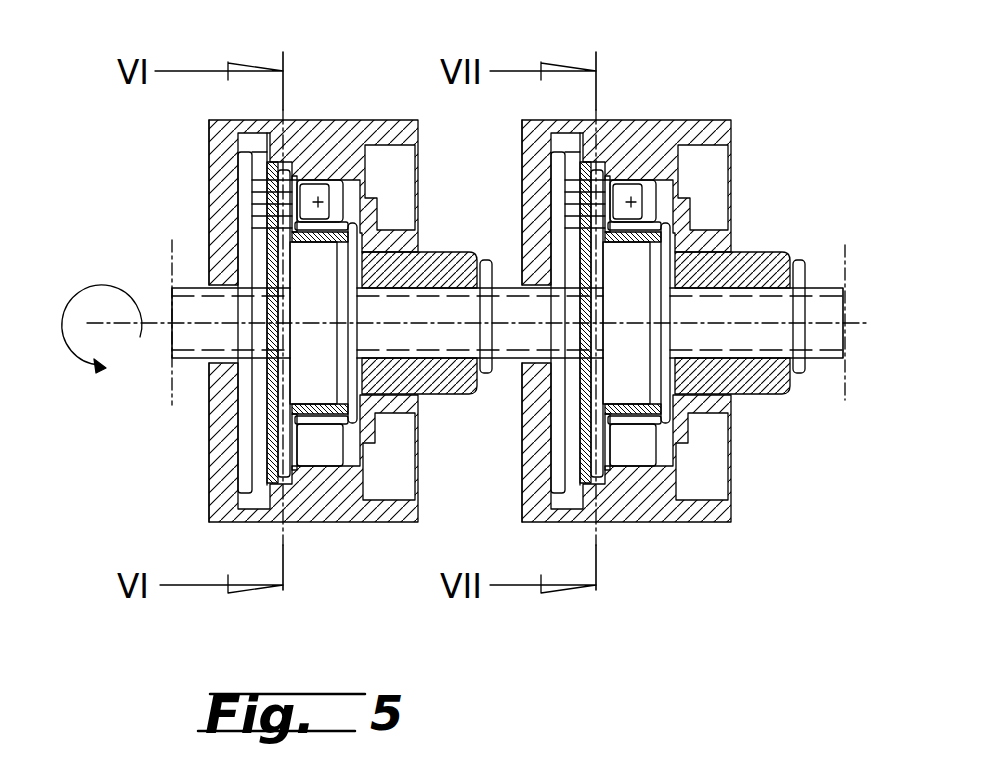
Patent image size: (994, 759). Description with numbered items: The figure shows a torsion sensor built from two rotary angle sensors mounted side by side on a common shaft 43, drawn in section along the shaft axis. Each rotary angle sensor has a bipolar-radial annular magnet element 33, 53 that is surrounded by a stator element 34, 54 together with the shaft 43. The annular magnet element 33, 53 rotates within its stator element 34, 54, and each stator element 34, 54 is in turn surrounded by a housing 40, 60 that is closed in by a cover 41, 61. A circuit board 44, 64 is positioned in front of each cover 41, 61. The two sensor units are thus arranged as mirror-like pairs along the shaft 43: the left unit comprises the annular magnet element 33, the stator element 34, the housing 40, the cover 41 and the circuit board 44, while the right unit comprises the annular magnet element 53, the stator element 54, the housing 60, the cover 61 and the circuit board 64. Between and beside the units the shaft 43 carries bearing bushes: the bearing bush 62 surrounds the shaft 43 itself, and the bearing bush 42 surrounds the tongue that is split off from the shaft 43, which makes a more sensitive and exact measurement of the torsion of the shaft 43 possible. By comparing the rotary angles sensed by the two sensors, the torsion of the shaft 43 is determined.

The annular magnet element 33 is at (325, 425).
The stator element 34 is at (320, 447).
The housing 40 is at (327, 487).
The cover 41 is at (223, 427).
The bearing bush 42 is at (420, 275).
The shaft 43 is at (190, 347).
The circuit board 44 is at (250, 247).
The annular magnet element 53 is at (706, 336).
The stator element 54 is at (708, 448).
The housing 60 is at (626, 483).
The cover 61 is at (496, 328).
The bearing bush 62 is at (732, 294).
The circuit board 64 is at (522, 322).